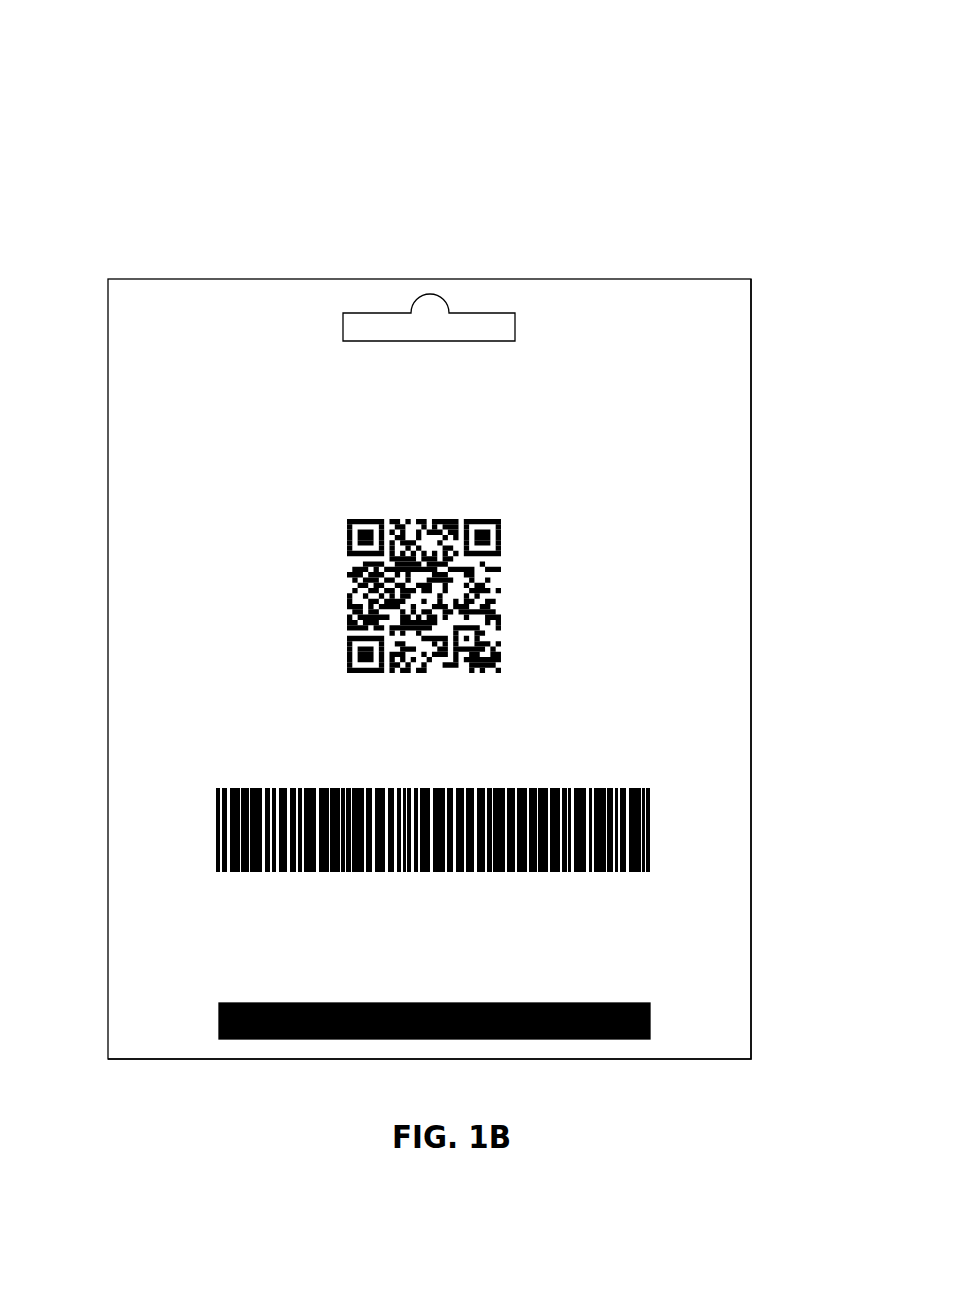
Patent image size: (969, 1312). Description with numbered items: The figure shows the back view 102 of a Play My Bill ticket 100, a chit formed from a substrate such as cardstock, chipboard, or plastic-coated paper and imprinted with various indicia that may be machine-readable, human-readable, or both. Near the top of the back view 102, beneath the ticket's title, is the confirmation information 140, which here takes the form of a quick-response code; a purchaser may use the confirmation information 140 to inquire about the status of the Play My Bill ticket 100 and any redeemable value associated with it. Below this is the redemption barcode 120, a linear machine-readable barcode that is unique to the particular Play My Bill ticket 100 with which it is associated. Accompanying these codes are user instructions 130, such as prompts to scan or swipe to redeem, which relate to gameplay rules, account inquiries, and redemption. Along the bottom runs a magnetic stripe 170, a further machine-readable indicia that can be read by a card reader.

The Play My Bill ticket 100 is at (147, 102).
The back view 102 is at (752, 1051).
The redemption barcode 120 is at (216, 817).
The play instructions 130 is at (558, 975).
The confirmation information 140 is at (513, 618).
The magnetic stripe 170 is at (277, 1040).